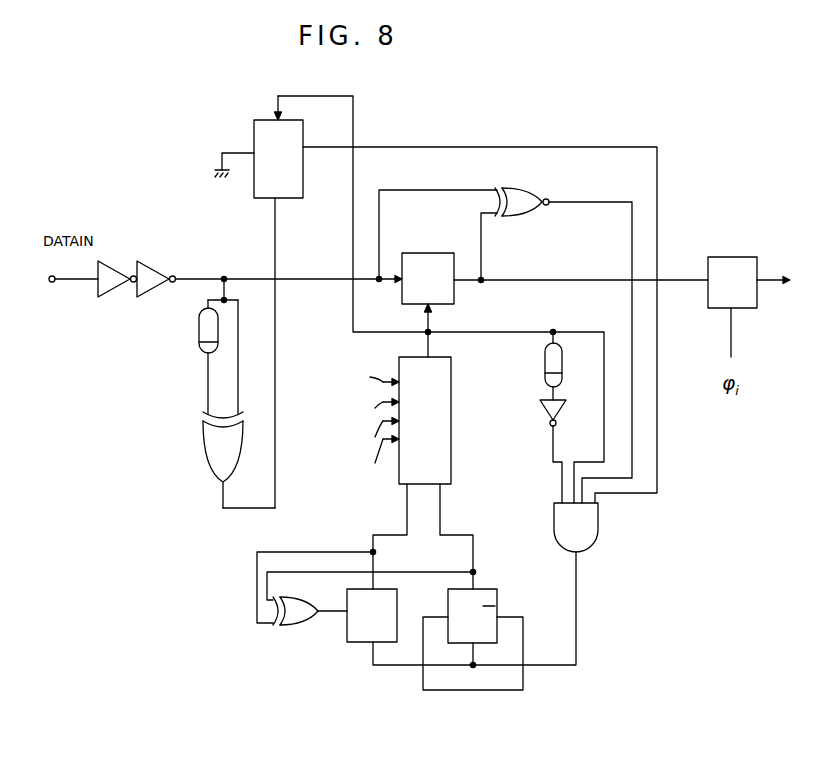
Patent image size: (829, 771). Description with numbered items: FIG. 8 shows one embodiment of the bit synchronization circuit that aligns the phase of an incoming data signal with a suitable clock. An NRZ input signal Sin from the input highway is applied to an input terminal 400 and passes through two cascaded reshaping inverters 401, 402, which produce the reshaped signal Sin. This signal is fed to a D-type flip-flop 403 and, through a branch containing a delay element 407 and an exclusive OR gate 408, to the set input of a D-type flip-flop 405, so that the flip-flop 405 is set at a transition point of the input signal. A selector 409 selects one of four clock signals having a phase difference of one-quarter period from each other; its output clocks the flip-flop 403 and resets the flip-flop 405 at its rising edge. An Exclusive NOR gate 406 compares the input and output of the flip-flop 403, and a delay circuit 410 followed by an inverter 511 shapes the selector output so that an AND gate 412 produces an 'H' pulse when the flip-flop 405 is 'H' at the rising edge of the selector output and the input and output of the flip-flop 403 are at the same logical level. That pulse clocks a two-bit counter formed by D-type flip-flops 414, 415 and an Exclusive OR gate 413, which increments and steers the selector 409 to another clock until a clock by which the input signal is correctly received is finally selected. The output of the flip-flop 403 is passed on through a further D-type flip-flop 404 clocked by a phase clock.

The input terminal 400 is at (55, 284).
The reshaping inverter 401 is at (113, 258).
The reshaping inverter 402 is at (166, 265).
The D-type flip-flop 403 is at (426, 254).
The D-type flip-flop 404 is at (730, 257).
The D-type flip-flop 405 is at (254, 196).
The Exclusive NOR gate 406 is at (530, 190).
The delay circuit 407 is at (199, 333).
The exclusive OR gate 408 is at (204, 458).
The selector 409 is at (451, 393).
The delay circuit 410 is at (545, 364).
The AND gate 412 is at (598, 538).
The Exclusive OR gate 413 is at (291, 628).
The D-type flip-flop 414 is at (348, 642).
The D-type flip-flop 415 is at (491, 589).
The inverter 511 is at (541, 410).